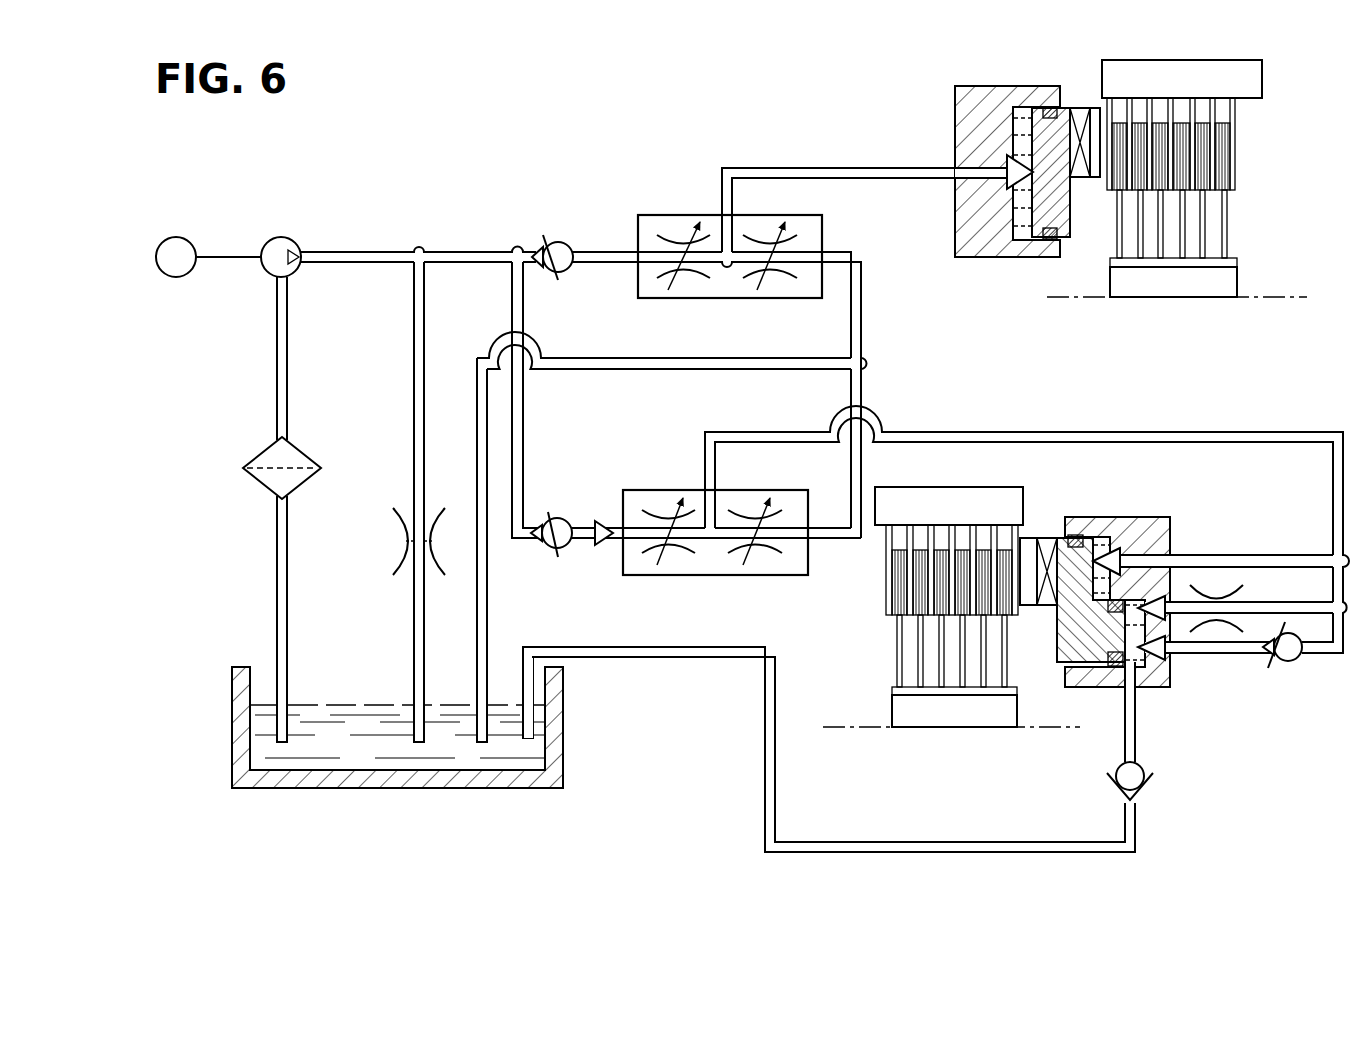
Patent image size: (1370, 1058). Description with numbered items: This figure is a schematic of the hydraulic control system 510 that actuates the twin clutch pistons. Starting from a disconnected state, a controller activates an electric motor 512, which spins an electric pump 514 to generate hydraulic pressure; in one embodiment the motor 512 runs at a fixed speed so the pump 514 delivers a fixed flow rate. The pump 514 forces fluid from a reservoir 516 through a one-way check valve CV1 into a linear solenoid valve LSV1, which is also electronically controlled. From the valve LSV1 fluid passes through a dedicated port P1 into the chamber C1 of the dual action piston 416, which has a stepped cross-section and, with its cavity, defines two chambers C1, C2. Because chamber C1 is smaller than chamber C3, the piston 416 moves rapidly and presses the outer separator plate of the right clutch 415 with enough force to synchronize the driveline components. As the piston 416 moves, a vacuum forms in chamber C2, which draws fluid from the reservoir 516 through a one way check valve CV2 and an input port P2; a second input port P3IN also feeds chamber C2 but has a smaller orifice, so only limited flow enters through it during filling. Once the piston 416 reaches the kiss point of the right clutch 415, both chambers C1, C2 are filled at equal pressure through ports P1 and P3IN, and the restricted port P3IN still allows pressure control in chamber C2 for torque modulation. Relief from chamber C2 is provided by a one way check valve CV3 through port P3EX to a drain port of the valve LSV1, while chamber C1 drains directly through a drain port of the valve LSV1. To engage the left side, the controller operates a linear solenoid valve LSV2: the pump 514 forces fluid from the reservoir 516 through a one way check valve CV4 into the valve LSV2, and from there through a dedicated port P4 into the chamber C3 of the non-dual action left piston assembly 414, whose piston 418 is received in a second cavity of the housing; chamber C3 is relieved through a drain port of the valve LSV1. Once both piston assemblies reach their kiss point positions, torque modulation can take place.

The non-dual action left piston assembly 414 is at (1178, 50).
The right clutch 415 is at (972, 480).
The dual action piston 416 is at (1072, 652).
The piston 418 is at (1040, 194).
The hydraulic control system 510 is at (268, 540).
The electric motor 512 is at (177, 237).
The electric pump 514 is at (282, 237).
The reservoir 516 is at (530, 757).
The chamber C1 is at (1103, 537).
The chamber C2 is at (1136, 650).
The chamber C3 is at (1025, 135).
The dedicated port P1 is at (1213, 553).
The input port P2 is at (1117, 712).
The second input port P3 IN P3IN is at (1235, 604).
The port P3 EX P3EX is at (1206, 657).
The dedicated port P4 is at (877, 197).
The one-way check valve CV1 is at (554, 517).
The one way check valve CV2 is at (1154, 781).
The one way check valve CV3 is at (1284, 661).
The one way check valve CV4 is at (552, 242).
The linear solenoid valve LSV1 is at (656, 490).
The linear solenoid valve LSV2 is at (656, 215).